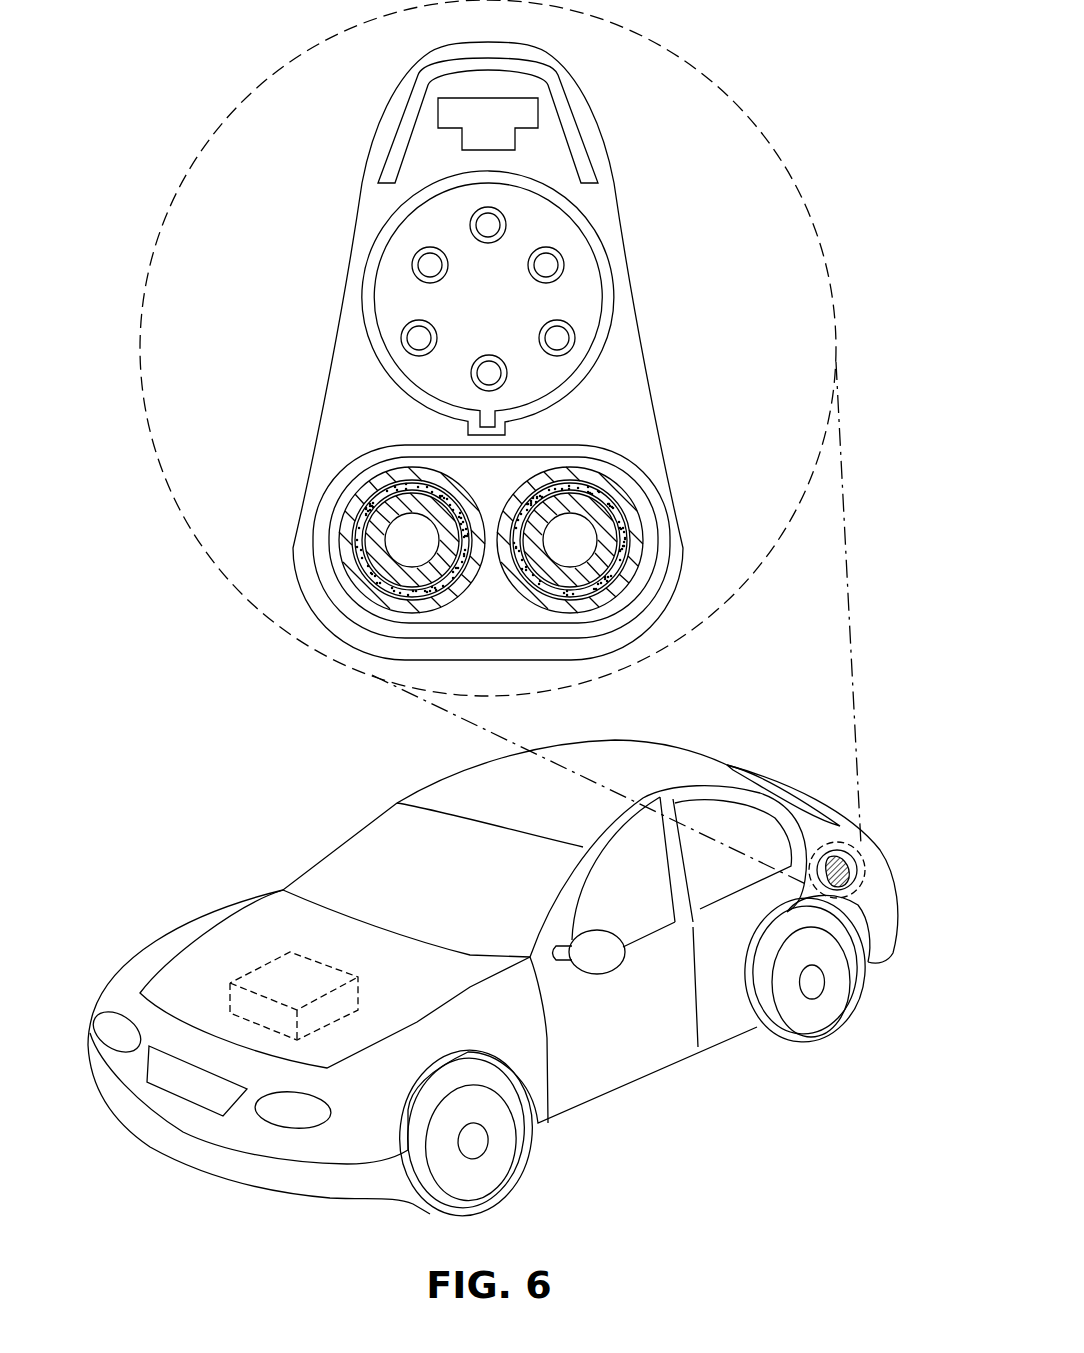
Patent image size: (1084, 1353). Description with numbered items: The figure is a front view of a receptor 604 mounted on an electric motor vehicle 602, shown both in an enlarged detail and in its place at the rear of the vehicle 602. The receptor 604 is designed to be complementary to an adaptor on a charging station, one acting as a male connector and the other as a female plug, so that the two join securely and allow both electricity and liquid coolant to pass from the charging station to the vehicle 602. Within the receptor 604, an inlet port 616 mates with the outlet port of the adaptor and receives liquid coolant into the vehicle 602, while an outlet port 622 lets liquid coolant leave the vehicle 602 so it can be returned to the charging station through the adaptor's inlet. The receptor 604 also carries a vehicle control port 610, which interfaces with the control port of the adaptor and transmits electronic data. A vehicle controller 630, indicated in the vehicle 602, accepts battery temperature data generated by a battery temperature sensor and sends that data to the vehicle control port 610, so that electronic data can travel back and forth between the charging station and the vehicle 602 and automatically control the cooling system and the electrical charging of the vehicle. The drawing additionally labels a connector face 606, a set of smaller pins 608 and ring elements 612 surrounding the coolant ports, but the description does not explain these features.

The electric motor vehicle 602 is at (325, 795).
The receptor 604 is at (672, 227).
The connector face 606 is at (445, 302).
The signal pins 608 is at (551, 265).
The vehicle control port 610 is at (485, 226).
The outer insulation ring of DC pin 612 is at (352, 498).
The inlet port 616 is at (622, 530).
The outlet port 622 is at (357, 530).
The vehicle controller 630 is at (260, 963).